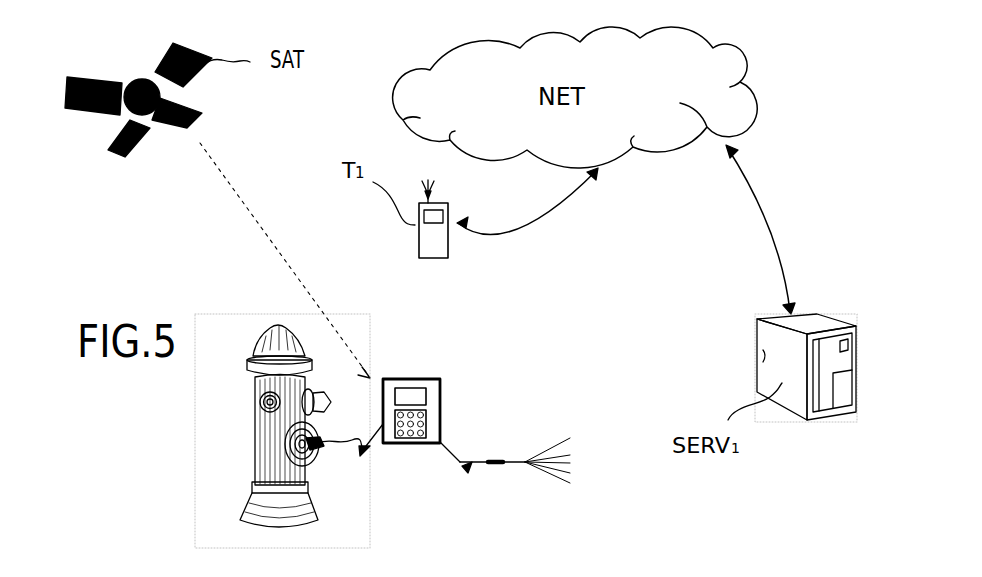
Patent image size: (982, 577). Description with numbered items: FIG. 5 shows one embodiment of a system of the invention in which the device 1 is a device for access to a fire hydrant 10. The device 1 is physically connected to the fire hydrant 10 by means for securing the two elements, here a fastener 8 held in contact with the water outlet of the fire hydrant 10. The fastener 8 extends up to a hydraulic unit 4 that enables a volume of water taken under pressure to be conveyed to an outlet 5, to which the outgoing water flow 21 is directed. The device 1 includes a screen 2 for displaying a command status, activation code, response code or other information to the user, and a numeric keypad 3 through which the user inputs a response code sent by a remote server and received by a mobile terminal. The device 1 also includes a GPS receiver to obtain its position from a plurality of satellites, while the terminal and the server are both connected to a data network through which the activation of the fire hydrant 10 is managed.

The device 1 is at (395, 380).
The screen 2 is at (415, 398).
The numeric keypad 3 is at (418, 430).
The hydraulic unit 4 is at (363, 452).
The outlet 5 is at (496, 460).
The fastener 8 is at (320, 448).
The fire hydrant 10 is at (273, 442).
The outgoing water flow 21 is at (561, 438).